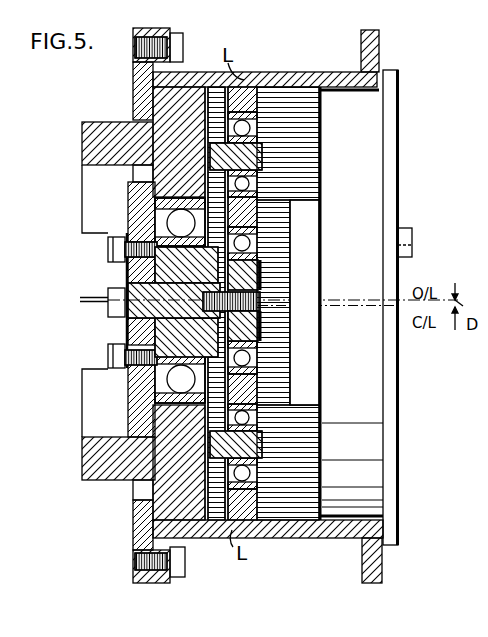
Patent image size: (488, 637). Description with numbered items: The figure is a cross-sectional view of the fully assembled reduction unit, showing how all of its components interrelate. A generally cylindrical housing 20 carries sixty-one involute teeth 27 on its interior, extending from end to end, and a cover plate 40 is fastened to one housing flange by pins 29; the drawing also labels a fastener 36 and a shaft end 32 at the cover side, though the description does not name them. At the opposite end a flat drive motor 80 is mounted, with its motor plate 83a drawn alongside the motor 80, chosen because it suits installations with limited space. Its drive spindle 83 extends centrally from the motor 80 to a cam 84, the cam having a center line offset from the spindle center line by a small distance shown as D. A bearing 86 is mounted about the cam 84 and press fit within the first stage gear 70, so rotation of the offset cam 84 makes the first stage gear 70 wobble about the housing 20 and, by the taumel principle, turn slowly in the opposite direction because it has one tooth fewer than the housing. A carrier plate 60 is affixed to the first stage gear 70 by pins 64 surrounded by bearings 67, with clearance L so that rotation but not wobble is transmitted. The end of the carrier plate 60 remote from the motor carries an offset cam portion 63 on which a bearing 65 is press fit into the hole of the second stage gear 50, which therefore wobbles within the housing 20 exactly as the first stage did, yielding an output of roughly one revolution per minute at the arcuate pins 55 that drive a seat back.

The housing 20 is at (297, 72).
The involute teeth 27 is at (293, 507).
The pins 29 is at (182, 577).
The shaft 32 is at (112, 315).
The bolt 36 is at (110, 368).
The cover plate 40 is at (133, 526).
The second stage gear 50 is at (187, 507).
The arcuate pins 55 is at (81, 133).
The carrier plate 60 is at (253, 390).
The cam portion 63 is at (178, 335).
The pins 64 is at (259, 160).
The bearing 65 is at (133, 220).
The bearing 67 is at (257, 503).
The first stage gear 70 is at (243, 510).
The drive motor 80 is at (385, 490).
The drive spindle 83 is at (253, 312).
The plate 83a is at (390, 450).
The cam 84 is at (262, 275).
The bearing 86 is at (262, 372).